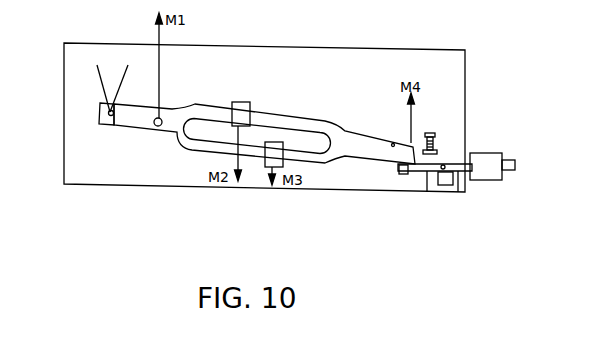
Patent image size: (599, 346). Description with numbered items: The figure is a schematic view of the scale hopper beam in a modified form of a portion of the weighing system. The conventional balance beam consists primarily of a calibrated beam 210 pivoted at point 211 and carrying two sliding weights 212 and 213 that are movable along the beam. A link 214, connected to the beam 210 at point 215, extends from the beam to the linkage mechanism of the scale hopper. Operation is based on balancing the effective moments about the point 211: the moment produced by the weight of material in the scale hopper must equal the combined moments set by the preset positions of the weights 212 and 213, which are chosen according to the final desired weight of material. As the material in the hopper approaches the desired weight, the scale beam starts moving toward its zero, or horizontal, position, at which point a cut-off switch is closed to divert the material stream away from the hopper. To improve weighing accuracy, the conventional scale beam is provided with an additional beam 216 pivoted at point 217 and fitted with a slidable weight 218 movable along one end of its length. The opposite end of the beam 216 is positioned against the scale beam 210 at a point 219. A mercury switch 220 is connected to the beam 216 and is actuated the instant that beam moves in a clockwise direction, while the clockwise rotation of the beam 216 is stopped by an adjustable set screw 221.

The calibrated beam 210 is at (282, 117).
The pivot point 211 is at (110, 116).
The sliding weight 212 is at (245, 102).
The sliding weight 213 is at (281, 143).
The link 214 is at (159, 62).
The connection point 215 is at (156, 126).
The beam 216 is at (424, 171).
The pivot point 217 is at (445, 165).
The slidable weight 218 is at (497, 157).
The contact point 219 is at (407, 169).
The mercury switch 220 is at (447, 178).
The adjustable set screw 221 is at (430, 133).